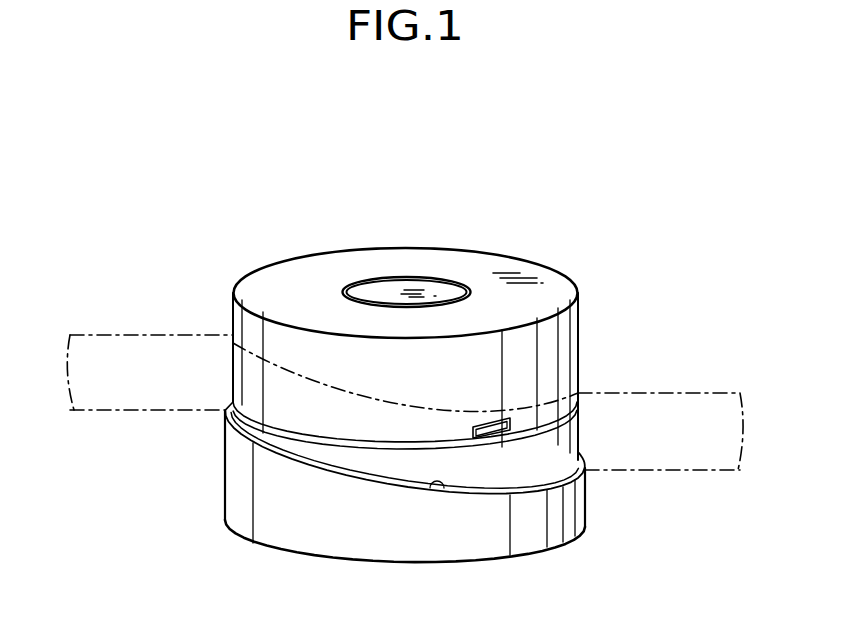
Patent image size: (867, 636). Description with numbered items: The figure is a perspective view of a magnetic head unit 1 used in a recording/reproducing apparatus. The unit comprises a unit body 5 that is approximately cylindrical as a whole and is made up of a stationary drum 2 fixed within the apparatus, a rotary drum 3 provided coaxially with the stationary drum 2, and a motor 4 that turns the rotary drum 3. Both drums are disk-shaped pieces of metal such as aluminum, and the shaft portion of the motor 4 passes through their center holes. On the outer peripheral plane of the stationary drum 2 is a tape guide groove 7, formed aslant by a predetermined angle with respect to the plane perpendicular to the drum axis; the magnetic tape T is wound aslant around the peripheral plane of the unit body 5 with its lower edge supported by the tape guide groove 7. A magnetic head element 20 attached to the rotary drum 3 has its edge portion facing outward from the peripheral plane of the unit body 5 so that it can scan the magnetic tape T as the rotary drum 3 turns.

The magnetic head unit 1 is at (619, 251).
The stationary drum 2 is at (279, 488).
The rotary drum 3 is at (335, 355).
The motor 4 is at (390, 288).
The unit body 5 is at (263, 181).
The tape guide groove 7 is at (440, 490).
The magnetic head element 20 is at (491, 438).
The magnetic tape T is at (684, 393).